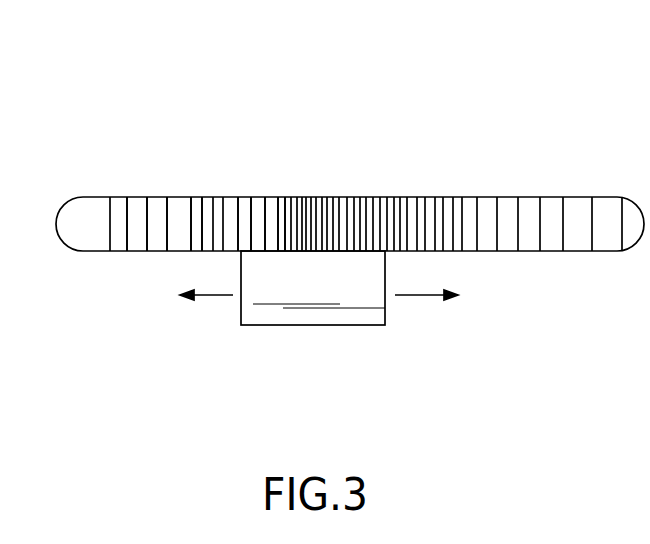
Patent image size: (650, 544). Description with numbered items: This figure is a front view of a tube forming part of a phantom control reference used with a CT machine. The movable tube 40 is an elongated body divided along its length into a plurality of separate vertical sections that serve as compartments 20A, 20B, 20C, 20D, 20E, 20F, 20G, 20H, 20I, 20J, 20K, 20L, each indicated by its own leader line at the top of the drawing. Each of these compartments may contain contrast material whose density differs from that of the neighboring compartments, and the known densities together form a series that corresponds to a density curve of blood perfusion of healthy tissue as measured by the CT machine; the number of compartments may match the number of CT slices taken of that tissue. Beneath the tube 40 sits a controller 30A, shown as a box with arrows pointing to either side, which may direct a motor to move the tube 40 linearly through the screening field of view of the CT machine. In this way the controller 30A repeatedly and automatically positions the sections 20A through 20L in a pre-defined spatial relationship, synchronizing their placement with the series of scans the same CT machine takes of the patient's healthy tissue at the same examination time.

The compartment 20A is at (117, 218).
The compartment 20B is at (134, 218).
The compartment 20C is at (157, 216).
The compartment 20D is at (179, 208).
The compartment 20E is at (197, 205).
The compartment 20F is at (212, 206).
The compartment 20G is at (231, 206).
The compartment 20H is at (247, 205).
The compartment 20I is at (257, 203).
The compartment 20J is at (272, 205).
The compartment 20K is at (282, 205).
The compartment 20L is at (290, 205).
The controller 30A is at (385, 325).
The movable tube 40 is at (577, 251).